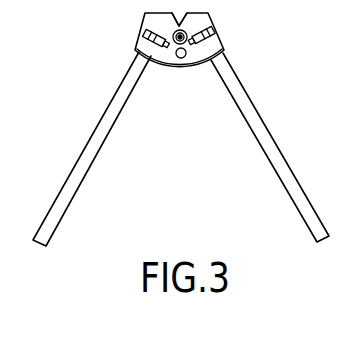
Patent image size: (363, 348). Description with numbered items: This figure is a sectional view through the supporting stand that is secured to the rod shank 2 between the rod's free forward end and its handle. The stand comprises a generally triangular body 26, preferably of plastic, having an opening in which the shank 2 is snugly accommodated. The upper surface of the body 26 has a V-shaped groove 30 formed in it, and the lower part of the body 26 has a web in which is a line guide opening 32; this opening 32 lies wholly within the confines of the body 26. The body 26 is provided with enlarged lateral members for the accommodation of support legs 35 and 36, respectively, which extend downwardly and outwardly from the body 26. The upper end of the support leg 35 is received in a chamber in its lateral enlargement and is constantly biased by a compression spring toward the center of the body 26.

The rod shank 2 is at (197, 27).
The generally triangular body 26 is at (155, 67).
The V-shaped groove 30 is at (177, 22).
The line guide opening 32 is at (184, 59).
The support leg 35 is at (72, 170).
The support leg 36 is at (278, 155).